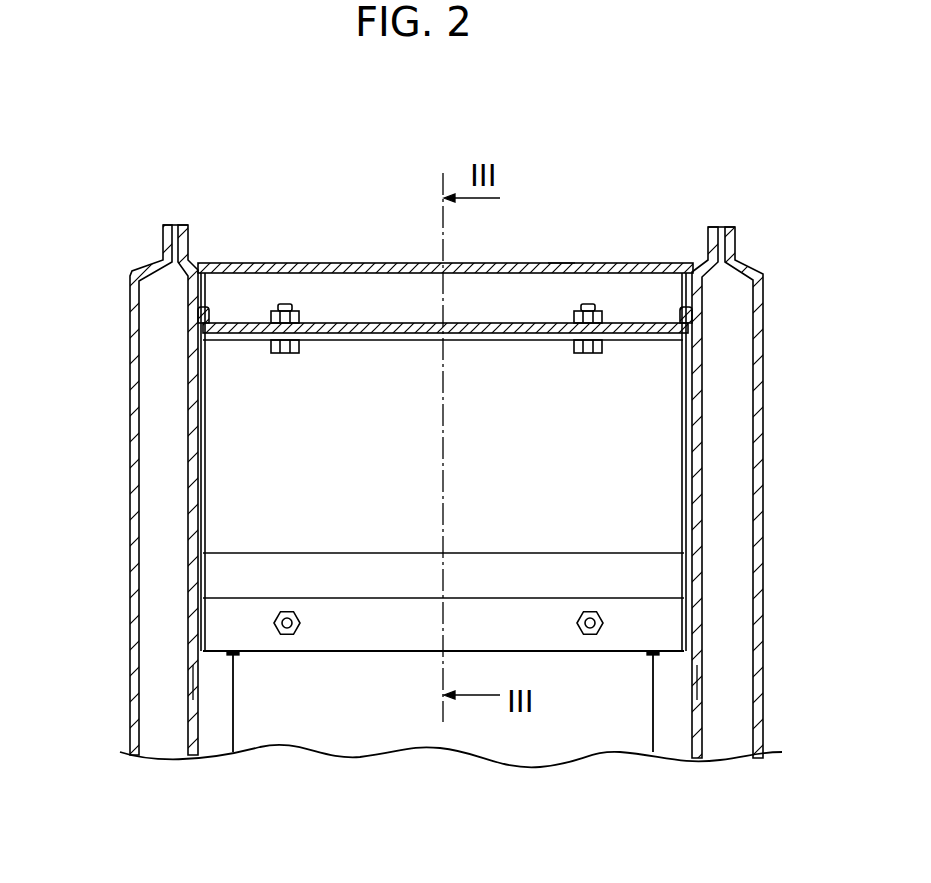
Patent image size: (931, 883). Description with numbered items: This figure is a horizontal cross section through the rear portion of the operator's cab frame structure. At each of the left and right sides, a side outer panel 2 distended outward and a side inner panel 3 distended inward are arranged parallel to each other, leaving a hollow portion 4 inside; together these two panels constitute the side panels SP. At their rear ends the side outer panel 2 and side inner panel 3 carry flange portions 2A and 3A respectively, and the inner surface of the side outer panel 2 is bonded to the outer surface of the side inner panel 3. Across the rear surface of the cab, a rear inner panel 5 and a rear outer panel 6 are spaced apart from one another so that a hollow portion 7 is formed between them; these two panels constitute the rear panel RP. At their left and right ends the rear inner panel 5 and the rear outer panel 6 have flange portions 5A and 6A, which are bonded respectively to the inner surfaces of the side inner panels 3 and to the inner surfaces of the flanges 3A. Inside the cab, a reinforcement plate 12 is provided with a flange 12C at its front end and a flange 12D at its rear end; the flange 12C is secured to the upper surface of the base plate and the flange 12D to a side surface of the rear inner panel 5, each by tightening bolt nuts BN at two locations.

The side outer panel 2 is at (426, 457).
The flange portion 2A is at (437, 457).
The flange portion 3A is at (160, 248).
The flange portion 6A is at (195, 250).
The rear outer panel 6 is at (448, 450).
The hollow portion 7 is at (562, 263).
The rear panel RP is at (398, 262).
The flange portion 5A is at (207, 312).
The rear inner panel 5 is at (445, 419).
The bolt nuts BN is at (287, 355).
The reinforcement plate 12 is at (526, 463).
The flange 12D is at (700, 357).
The flange 12C is at (670, 638).
The side panels SP is at (426, 457).
The side inner panel 3 is at (192, 683).
The hollow portion 4 is at (190, 730).